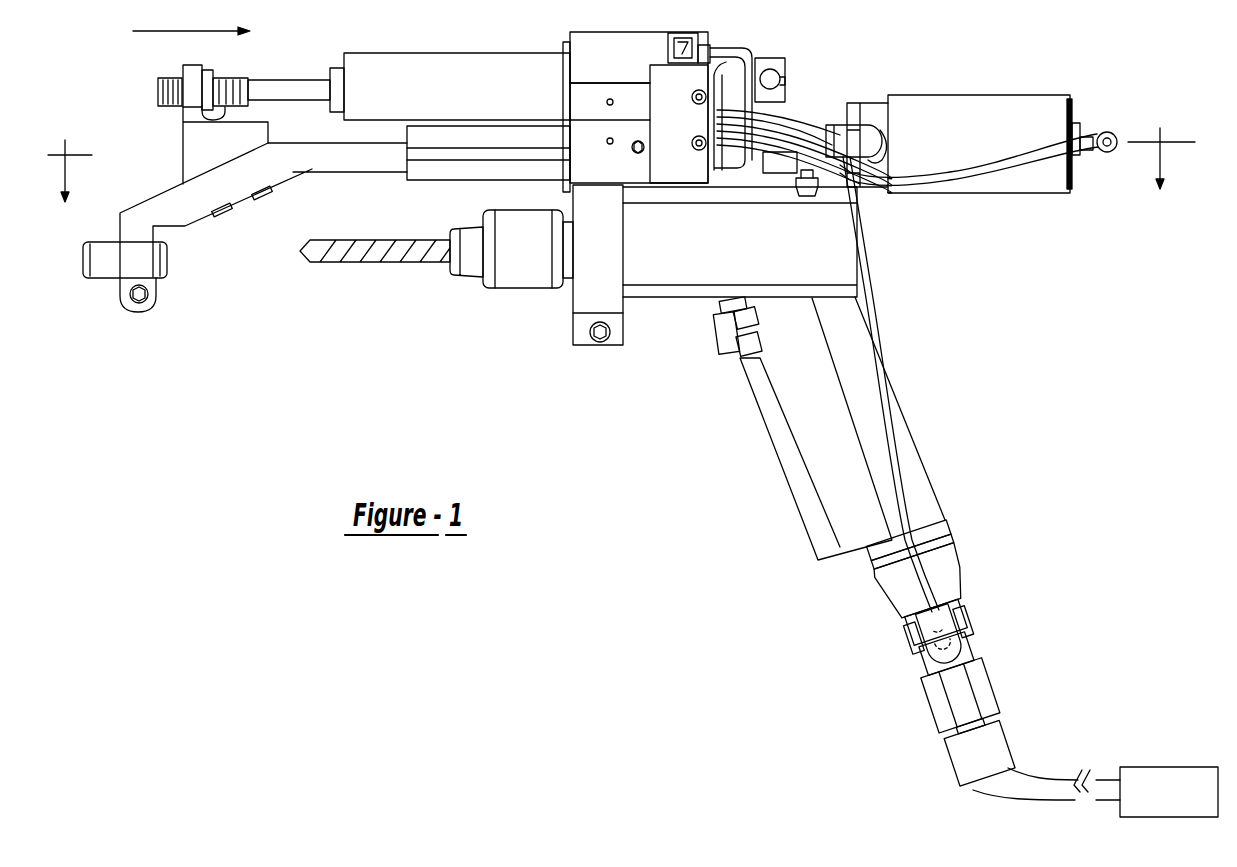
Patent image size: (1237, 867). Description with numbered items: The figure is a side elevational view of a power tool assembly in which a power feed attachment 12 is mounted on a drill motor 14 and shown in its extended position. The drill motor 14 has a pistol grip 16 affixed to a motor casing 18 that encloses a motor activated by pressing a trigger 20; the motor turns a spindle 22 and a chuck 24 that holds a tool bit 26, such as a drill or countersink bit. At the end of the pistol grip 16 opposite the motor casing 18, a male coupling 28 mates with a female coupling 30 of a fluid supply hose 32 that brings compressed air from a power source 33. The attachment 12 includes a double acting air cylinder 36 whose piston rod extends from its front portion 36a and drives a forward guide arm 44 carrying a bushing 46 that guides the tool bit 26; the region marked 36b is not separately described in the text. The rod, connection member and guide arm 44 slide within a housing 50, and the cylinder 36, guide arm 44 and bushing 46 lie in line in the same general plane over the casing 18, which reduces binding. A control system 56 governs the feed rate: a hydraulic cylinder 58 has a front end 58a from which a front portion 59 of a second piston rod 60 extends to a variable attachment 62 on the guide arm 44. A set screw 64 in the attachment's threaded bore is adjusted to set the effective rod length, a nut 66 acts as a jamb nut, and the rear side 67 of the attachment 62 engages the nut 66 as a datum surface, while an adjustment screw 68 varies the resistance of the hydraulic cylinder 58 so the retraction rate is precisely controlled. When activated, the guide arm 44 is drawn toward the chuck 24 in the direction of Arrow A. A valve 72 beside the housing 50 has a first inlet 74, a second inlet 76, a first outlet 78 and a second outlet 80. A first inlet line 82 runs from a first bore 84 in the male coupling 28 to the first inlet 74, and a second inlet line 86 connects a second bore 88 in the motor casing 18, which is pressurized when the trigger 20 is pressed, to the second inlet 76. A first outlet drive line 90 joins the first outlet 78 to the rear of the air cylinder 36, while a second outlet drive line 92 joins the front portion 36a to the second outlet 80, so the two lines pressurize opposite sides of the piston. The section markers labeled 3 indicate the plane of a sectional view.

The Arrow A is at (133, 31).
The section line 3- 3 is at (621, 187).
The power feed attachment 12 is at (496, 32).
The drill motor 14 is at (642, 460).
The pistol grip 16 is at (920, 475).
The motor casing 18 is at (822, 272).
The trigger 20 is at (728, 360).
The spindle 22 is at (563, 257).
The chuck 24 is at (490, 255).
The tool bit 26 is at (378, 253).
The male coupling 28 is at (934, 704).
The female coupling 30 is at (1007, 733).
The fluid supply hose 32 is at (1053, 787).
The power source 33 is at (1165, 775).
The double acting air cylinder 36 is at (974, 98).
The front portion of double acting air cylinder 36a is at (1072, 112).
The cylinder mount 36b is at (862, 103).
The guide arm 44 is at (183, 212).
The bushing 46 is at (103, 275).
The housing 50 is at (453, 163).
The control system 56 is at (592, 32).
The hydraulic cylinder 58 is at (404, 58).
The front end of hydraulic cylinder 58a is at (338, 68).
The front portion of second piston rod 59 is at (222, 119).
The second piston rod 60 is at (296, 80).
The variable attachment 62 is at (160, 80).
The set screw 64 is at (242, 78).
The nut 66 is at (212, 70).
The rear side of variable attachment 67 is at (203, 65).
The adjustment screw 68 is at (790, 113).
The valve 72 is at (667, 127).
The first inlet 74 is at (705, 122).
The second inlet 76 is at (700, 46).
The first outlet 78 is at (713, 170).
The second outlet 80 is at (730, 73).
The first inlet line 82 is at (888, 340).
The first bore 84 is at (960, 623).
The second inlet line 86 is at (756, 62).
The second bore 88 is at (812, 205).
The first outlet drive line 90 is at (1097, 132).
The second outlet drive line 92 is at (838, 122).